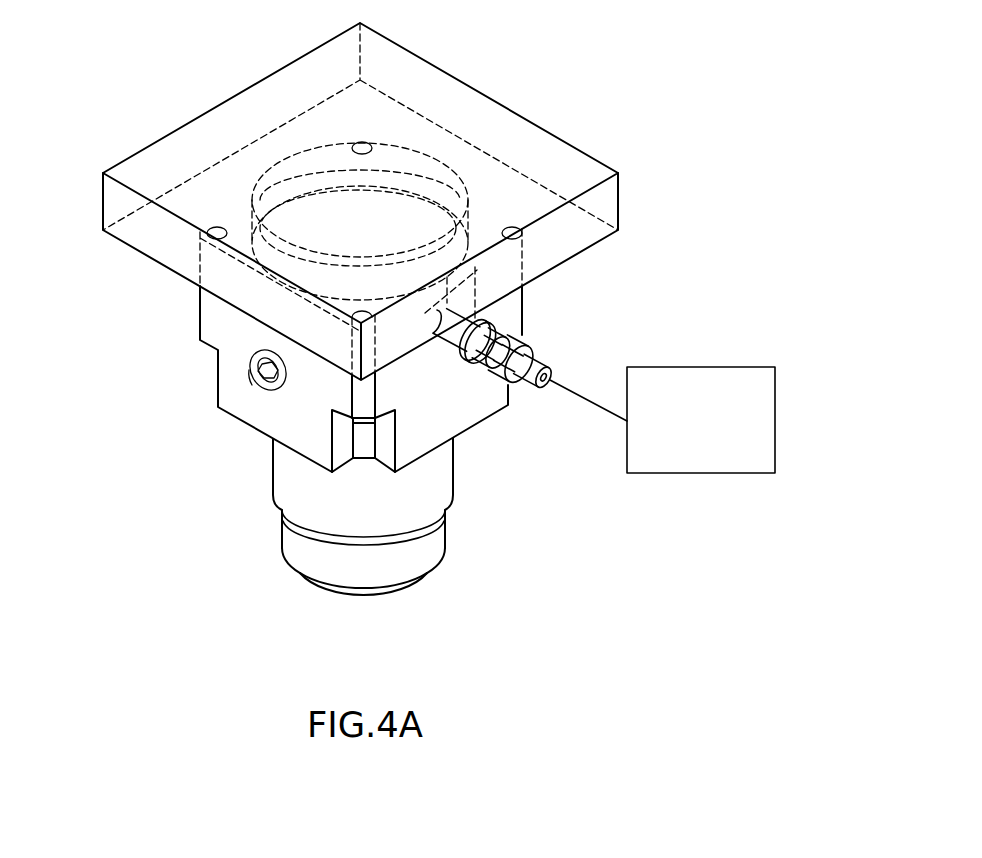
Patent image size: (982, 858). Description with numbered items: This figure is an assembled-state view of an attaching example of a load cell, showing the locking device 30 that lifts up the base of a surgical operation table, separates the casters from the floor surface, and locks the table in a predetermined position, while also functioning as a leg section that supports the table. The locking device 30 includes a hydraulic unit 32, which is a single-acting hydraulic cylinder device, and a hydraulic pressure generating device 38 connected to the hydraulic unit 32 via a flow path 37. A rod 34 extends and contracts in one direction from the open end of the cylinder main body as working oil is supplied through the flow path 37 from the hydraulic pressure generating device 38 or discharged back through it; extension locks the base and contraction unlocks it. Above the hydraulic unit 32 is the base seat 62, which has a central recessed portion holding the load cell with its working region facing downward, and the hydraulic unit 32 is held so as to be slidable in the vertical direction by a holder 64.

The locking device 30 is at (377, 314).
The hydraulic unit 32 is at (377, 533).
The rod 34 is at (437, 547).
The flow path 37 is at (581, 396).
The hydraulic pressure generating device 38 is at (709, 474).
The base seat 62 is at (208, 110).
The holder 64 is at (513, 312).